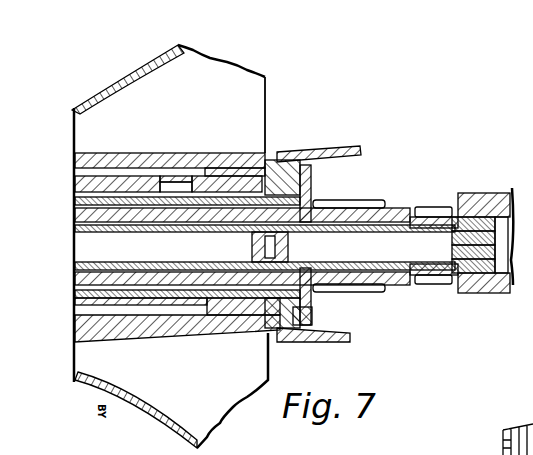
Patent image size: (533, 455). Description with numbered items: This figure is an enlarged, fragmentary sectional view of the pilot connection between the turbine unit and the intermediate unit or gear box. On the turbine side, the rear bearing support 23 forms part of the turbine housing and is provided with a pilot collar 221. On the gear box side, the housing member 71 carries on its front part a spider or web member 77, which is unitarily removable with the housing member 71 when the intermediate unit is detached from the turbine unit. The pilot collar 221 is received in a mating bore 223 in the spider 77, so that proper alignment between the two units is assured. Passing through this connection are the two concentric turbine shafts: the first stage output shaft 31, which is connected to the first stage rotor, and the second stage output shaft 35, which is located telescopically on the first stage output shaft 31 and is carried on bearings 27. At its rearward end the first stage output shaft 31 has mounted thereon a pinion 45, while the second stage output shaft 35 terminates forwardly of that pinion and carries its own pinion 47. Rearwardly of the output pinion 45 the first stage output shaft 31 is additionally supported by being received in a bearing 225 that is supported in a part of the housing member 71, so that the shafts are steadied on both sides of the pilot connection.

The rear bearing support 23 is at (152, 72).
The pilot collar 221 is at (256, 152).
The mating bore 223 is at (287, 163).
The spider or web member 77 is at (352, 148).
The pinion 47 is at (365, 199).
The pinion 45 is at (430, 206).
The housing member 71 is at (513, 193).
The second stage output shaft 35 is at (152, 215).
The first stage output shaft 31 is at (183, 243).
The bearings 27 is at (302, 292).
The bearing 225 is at (485, 296).